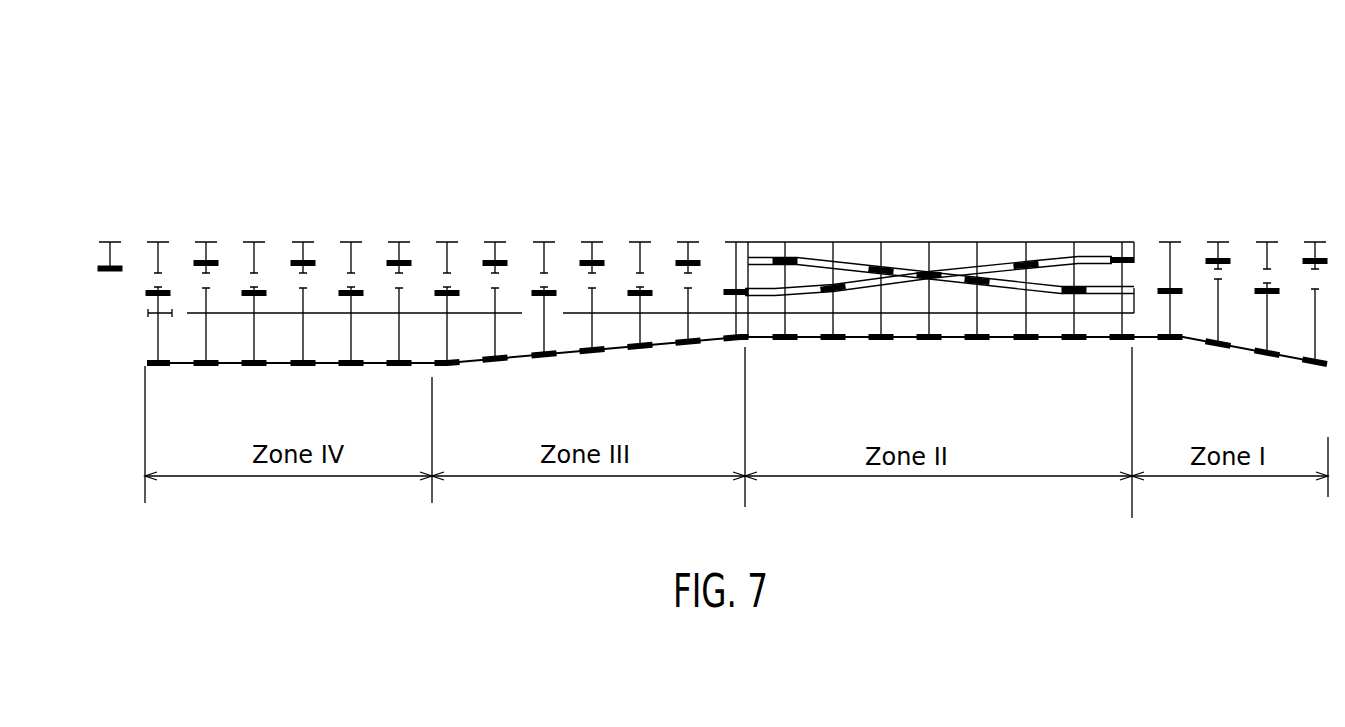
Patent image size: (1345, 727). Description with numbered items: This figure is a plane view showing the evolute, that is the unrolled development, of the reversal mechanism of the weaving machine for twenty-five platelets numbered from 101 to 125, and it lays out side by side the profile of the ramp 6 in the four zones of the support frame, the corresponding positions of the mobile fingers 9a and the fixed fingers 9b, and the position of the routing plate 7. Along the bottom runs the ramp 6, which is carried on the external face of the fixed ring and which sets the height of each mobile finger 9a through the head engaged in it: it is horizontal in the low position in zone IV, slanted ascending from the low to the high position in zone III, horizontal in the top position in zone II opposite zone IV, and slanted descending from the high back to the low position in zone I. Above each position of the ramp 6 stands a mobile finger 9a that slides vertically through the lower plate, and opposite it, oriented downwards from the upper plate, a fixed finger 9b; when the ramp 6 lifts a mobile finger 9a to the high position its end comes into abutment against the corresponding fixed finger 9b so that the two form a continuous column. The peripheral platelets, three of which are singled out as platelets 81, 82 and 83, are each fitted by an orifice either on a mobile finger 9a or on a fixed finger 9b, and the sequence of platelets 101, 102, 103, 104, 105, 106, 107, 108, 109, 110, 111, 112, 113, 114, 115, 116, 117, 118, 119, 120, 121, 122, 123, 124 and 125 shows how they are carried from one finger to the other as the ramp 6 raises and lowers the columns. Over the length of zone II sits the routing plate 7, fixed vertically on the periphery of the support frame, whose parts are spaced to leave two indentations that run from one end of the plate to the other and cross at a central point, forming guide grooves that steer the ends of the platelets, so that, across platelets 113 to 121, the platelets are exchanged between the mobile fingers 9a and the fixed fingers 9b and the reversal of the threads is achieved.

The ramp 6 is at (472, 363).
The routing plate 7 is at (927, 232).
The platelet 81 is at (170, 292).
The platelet 82 is at (220, 262).
The platelet 83 is at (264, 290).
The mobile finger 9a is at (303, 337).
The fixed finger 9b is at (311, 242).
The platelet 101 is at (175, 244).
The platelet 102 is at (223, 244).
The platelet 103 is at (270, 244).
The platelet 104 is at (325, 277).
The platelet 105 is at (349, 272).
The platelet 106 is at (397, 272).
The platelet 107 is at (445, 272).
The platelet 108 is at (493, 270).
The platelet 109 is at (542, 268).
The platelet 110 is at (590, 266).
The platelet 111 is at (638, 264).
The platelet 112 is at (686, 262).
The platelet 113 is at (734, 259).
The platelet 114 is at (783, 259).
The platelet 115 is at (831, 259).
The platelet 116 is at (879, 259).
The platelet 117 is at (927, 259).
The platelet 118 is at (975, 259).
The platelet 119 is at (1024, 259).
The platelet 120 is at (1072, 259).
The platelet 121 is at (1120, 259).
The platelet 122 is at (1168, 259).
The platelet 123 is at (1216, 263).
The platelet 124 is at (1265, 267).
The platelet 125 is at (710, 272).